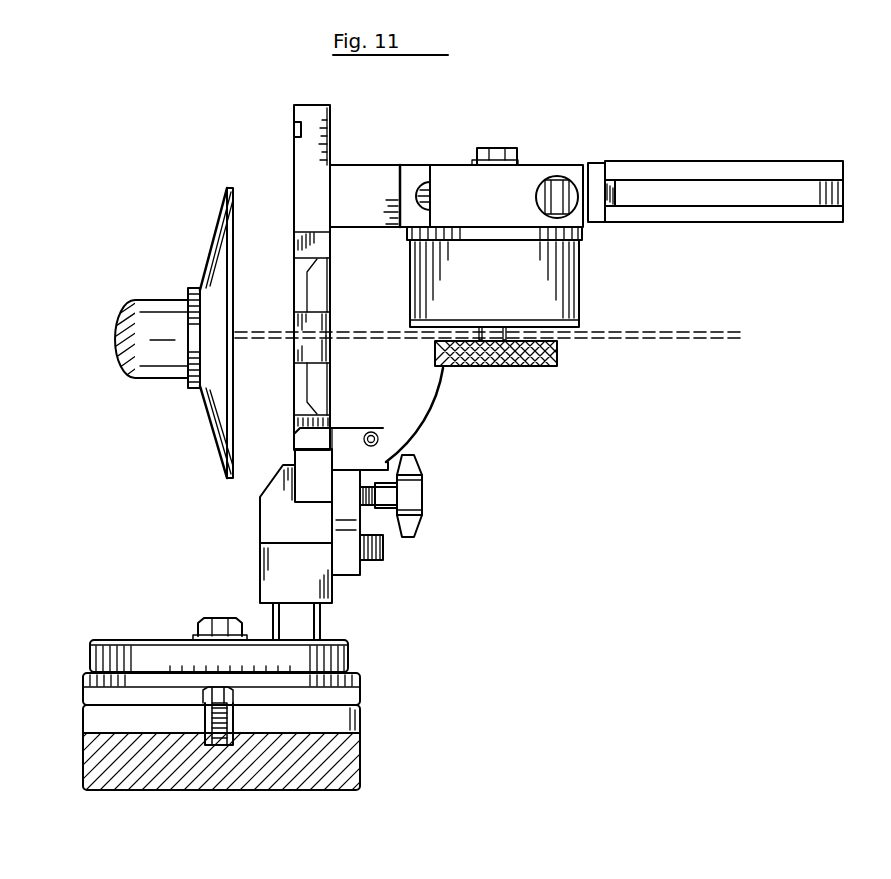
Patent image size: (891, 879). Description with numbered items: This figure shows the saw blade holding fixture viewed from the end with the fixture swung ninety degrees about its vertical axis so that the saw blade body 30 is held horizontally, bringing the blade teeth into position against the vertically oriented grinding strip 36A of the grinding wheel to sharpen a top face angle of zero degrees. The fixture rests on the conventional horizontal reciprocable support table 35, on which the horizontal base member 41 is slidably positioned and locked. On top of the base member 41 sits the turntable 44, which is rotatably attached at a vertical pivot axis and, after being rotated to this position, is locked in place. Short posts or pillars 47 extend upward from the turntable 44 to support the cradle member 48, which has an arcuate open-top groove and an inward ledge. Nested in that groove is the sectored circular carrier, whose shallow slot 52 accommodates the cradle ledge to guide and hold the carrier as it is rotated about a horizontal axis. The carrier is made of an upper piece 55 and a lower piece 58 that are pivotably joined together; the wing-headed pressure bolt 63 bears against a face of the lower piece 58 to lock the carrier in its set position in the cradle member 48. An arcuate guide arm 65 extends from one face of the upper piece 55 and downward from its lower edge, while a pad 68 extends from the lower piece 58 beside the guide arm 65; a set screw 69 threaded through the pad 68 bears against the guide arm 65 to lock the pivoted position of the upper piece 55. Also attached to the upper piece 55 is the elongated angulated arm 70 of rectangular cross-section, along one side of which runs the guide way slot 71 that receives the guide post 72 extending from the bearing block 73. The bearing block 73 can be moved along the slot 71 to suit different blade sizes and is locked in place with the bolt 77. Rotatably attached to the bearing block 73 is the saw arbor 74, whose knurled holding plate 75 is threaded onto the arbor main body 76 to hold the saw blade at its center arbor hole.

The main plate or body 30 is at (697, 340).
The horizontal reciprocable support table 35 is at (362, 772).
The grinding strip 36A is at (234, 252).
The horizontal base member 41 is at (362, 722).
The turntable 44 is at (348, 656).
The short posts or pillars 47 is at (323, 618).
The cradle member 48 is at (260, 578).
The shallow slot 52 is at (292, 128).
The upper piece 55 is at (292, 157).
The lower piece 58 is at (293, 458).
The wing-headed pressure bolt 63 is at (424, 513).
The arcuate guide arm 65 is at (441, 407).
The pad 68 is at (385, 430).
The set screw or pressure bolt 69 is at (381, 441).
The elongated angulated arm 70 is at (733, 223).
The guide way slot 71 is at (402, 186).
The guide post 72 is at (614, 194).
The bearing block 73 is at (568, 165).
The saw arbor 74 is at (583, 293).
The knurled holding plate 75 is at (558, 355).
The main body 76 is at (581, 247).
The bolt 77 is at (540, 188).